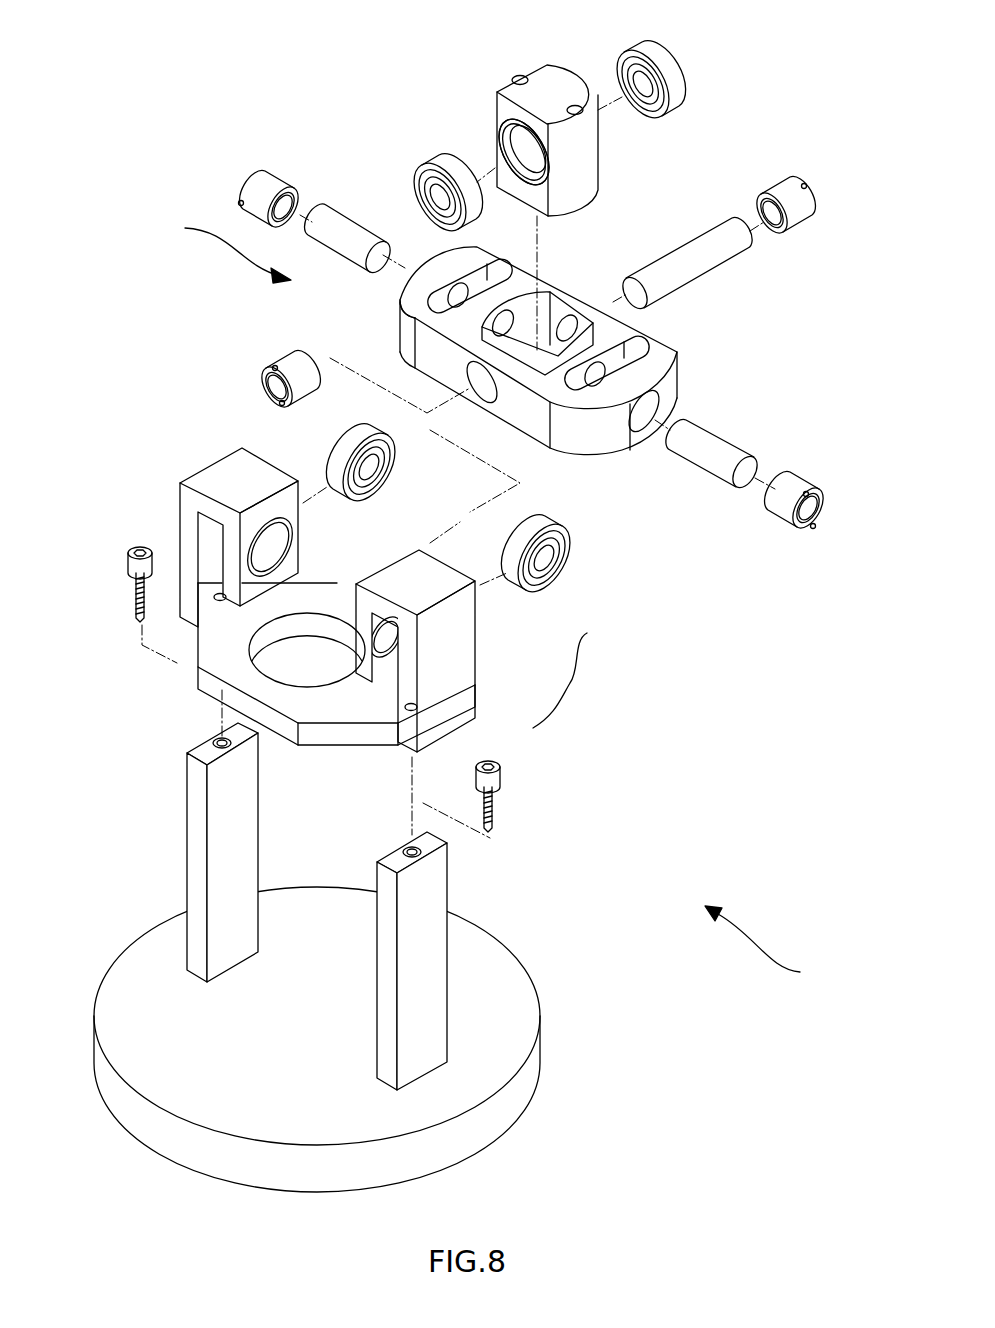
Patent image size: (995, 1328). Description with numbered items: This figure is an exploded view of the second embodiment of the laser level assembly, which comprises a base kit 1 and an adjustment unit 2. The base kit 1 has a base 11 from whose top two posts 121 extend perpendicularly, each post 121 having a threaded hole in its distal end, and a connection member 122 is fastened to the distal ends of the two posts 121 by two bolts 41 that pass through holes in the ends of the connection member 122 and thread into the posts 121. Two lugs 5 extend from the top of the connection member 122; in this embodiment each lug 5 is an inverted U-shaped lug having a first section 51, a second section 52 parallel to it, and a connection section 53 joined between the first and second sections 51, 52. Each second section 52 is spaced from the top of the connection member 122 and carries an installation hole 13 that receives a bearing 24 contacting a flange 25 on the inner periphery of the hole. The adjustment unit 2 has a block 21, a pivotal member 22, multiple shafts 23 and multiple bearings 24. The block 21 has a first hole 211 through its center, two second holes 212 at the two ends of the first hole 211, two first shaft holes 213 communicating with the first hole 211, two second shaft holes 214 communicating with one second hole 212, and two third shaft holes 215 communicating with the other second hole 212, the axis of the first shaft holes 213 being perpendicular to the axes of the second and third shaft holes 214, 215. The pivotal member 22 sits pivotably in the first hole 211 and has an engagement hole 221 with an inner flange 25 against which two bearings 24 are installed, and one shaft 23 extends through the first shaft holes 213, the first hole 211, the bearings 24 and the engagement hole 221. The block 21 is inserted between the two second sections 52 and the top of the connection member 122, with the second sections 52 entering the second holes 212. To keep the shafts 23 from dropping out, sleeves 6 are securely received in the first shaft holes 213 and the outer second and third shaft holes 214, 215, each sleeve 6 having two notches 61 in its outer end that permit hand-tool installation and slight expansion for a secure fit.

The base kit 1 is at (762, 946).
The base 11 is at (512, 1020).
The post 121 is at (432, 880).
The connection member 122 is at (215, 688).
The installation hole 13 is at (282, 537).
The adjustment unit 2 is at (225, 248).
The block 21 is at (543, 337).
The first hole 211 is at (553, 302).
The second hole 212 is at (503, 270).
The first shaft hole 213 is at (470, 375).
The second shaft hole 214 is at (430, 300).
The third shaft hole 215 is at (655, 398).
The pivotal member 22 is at (510, 98).
The engagement hole 221 is at (510, 150).
The shaft 23 is at (345, 240).
The bearing 24 is at (620, 66).
The flange 25 is at (505, 140).
The bolt 41 is at (505, 778).
The lug 5 is at (563, 680).
The first section 51 is at (462, 650).
The second section 52 is at (390, 663).
The connection section 53 is at (437, 592).
The sleeve 6 is at (258, 193).
The notch 61 is at (238, 205).